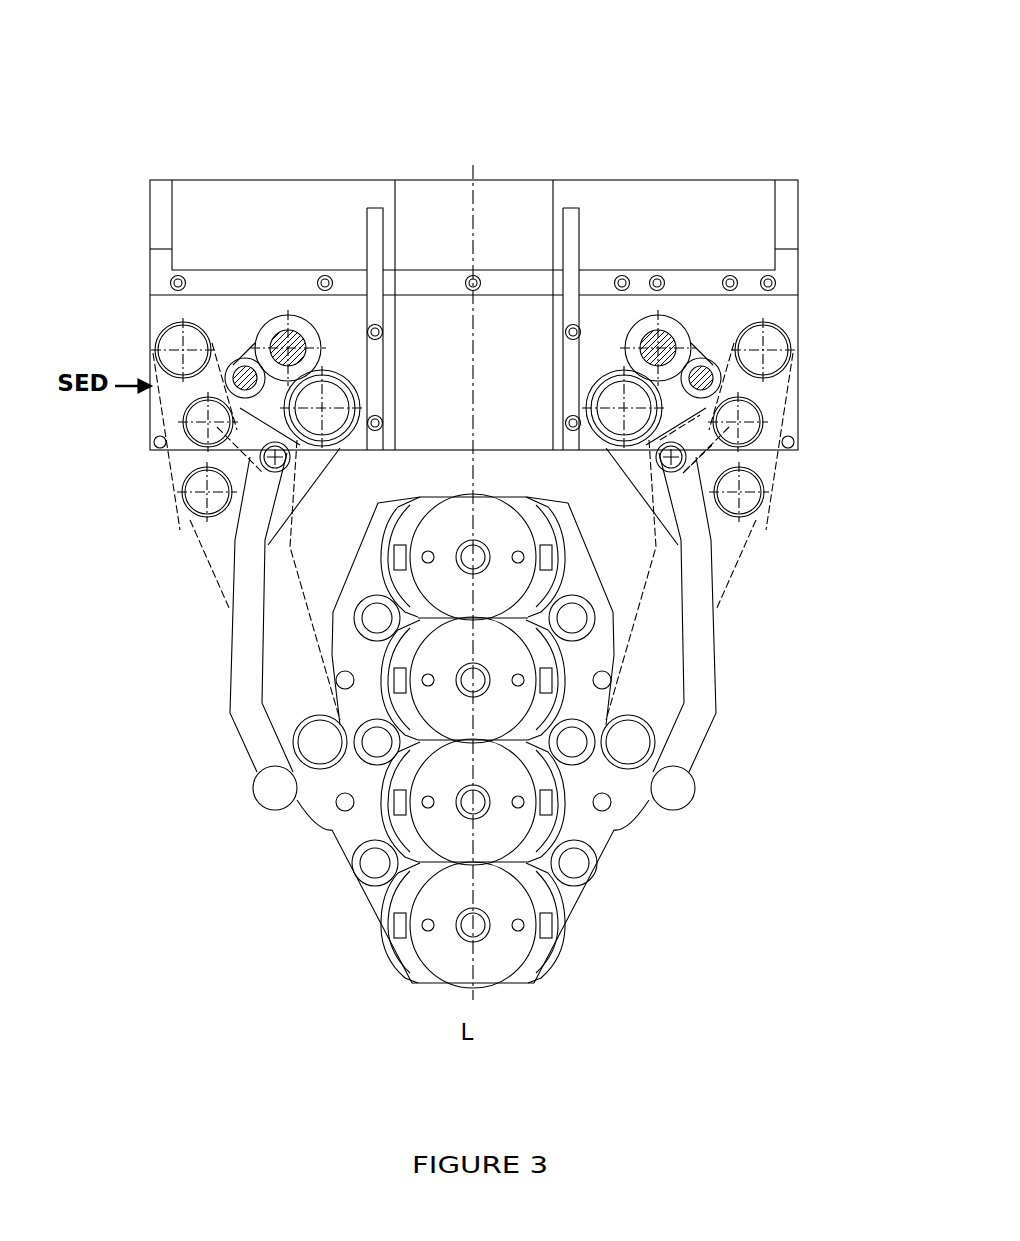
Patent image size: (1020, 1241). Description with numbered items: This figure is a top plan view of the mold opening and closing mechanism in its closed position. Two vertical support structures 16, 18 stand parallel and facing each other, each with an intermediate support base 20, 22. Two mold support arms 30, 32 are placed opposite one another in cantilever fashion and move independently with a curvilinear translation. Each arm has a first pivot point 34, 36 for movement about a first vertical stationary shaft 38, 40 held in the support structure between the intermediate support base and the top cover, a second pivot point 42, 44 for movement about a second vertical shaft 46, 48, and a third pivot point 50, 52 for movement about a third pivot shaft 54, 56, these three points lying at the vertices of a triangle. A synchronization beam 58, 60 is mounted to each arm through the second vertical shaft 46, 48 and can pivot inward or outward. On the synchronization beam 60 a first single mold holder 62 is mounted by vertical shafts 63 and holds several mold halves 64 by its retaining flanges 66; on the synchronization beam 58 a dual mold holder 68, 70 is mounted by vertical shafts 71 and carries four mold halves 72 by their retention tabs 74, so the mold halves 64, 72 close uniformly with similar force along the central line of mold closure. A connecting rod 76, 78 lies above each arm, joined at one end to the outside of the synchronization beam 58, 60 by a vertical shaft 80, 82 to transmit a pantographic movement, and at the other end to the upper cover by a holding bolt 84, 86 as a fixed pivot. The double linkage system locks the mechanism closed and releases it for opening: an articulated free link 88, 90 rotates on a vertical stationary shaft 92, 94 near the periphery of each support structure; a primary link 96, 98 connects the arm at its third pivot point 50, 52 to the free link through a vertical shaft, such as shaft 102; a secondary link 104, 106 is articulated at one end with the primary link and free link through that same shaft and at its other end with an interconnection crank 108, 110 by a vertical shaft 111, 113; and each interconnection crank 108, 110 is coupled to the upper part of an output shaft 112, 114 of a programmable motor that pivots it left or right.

The vertical support structure 16 is at (150, 258).
The vertical support structure 18 is at (780, 230).
The intermediate support base 20 is at (180, 300).
The intermediate support base 22 is at (782, 312).
The mold support arm 30 is at (222, 548).
The mold support arm 32 is at (733, 542).
The first pivot point 34 is at (328, 400).
The first pivot point 36 is at (613, 376).
The first vertical stationary shaft 38 is at (333, 385).
The first vertical stationary shaft 40 is at (610, 400).
The second pivot point 42 is at (317, 742).
The second pivot point 44 is at (647, 720).
The second vertical shaft 46 is at (298, 740).
The second vertical shaft 48 is at (625, 742).
The third pivot point 50 is at (272, 463).
The third pivot point 52 is at (762, 500).
The third pivot shaft 54 is at (190, 492).
The third pivot shaft 56 is at (747, 483).
The synchronization beam 58 is at (343, 822).
The synchronization beam 60 is at (620, 795).
The first single mold holder 62 is at (573, 912).
The vertical shafts 63 is at (572, 615).
The mold half 64 is at (507, 943).
The retaining flanges 66 is at (552, 925).
The dual mold holder 68 is at (372, 907).
The dual mold holder 70 is at (370, 570).
The vertical shafts 71 is at (372, 618).
The mold half 72 is at (426, 953).
The retention tabs 74 is at (400, 933).
The connecting rod 76 is at (245, 720).
The connecting rod 78 is at (695, 650).
The vertical shaft 80 is at (270, 788).
The vertical shaft 82 is at (680, 795).
The holding bolt 84 is at (196, 490).
The holding bolt 86 is at (658, 460).
The articulated free link 88 is at (172, 393).
The articulated free link 90 is at (757, 390).
The vertical stationary shaft 92 is at (172, 337).
The vertical stationary shaft 94 is at (758, 335).
The primary link 96 is at (190, 458).
The primary link 98 is at (762, 452).
The vertical shaft 102 is at (736, 405).
The secondary link 104 is at (235, 413).
The secondary link 106 is at (700, 412).
The interconnection crank 108 is at (245, 347).
The interconnection crank 110 is at (698, 360).
The vertical shaft 111 is at (227, 373).
The output shaft 112 is at (284, 338).
The vertical shaft 113 is at (707, 370).
The output shaft 114 is at (657, 333).